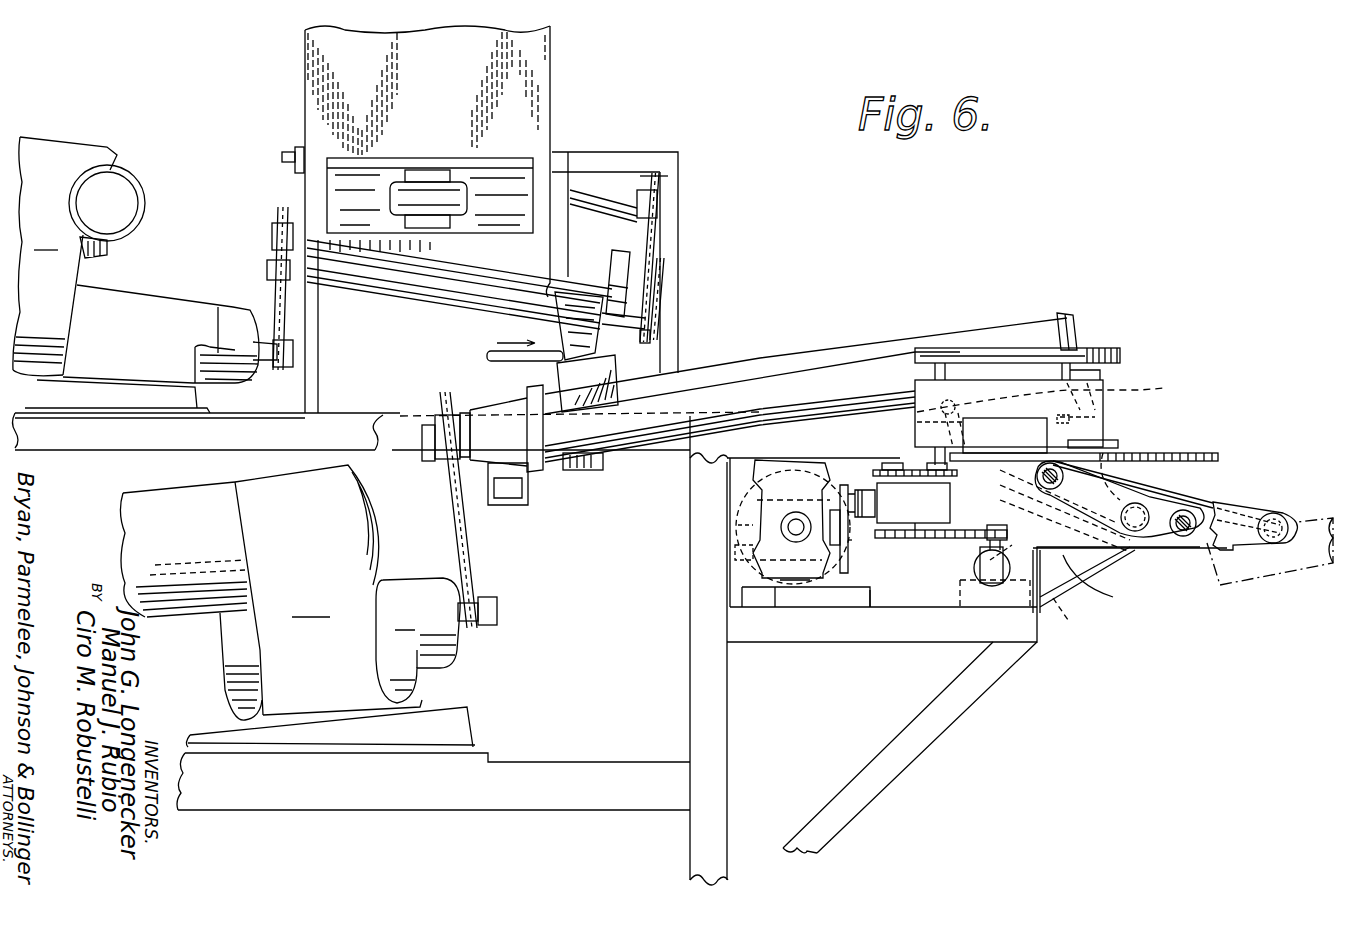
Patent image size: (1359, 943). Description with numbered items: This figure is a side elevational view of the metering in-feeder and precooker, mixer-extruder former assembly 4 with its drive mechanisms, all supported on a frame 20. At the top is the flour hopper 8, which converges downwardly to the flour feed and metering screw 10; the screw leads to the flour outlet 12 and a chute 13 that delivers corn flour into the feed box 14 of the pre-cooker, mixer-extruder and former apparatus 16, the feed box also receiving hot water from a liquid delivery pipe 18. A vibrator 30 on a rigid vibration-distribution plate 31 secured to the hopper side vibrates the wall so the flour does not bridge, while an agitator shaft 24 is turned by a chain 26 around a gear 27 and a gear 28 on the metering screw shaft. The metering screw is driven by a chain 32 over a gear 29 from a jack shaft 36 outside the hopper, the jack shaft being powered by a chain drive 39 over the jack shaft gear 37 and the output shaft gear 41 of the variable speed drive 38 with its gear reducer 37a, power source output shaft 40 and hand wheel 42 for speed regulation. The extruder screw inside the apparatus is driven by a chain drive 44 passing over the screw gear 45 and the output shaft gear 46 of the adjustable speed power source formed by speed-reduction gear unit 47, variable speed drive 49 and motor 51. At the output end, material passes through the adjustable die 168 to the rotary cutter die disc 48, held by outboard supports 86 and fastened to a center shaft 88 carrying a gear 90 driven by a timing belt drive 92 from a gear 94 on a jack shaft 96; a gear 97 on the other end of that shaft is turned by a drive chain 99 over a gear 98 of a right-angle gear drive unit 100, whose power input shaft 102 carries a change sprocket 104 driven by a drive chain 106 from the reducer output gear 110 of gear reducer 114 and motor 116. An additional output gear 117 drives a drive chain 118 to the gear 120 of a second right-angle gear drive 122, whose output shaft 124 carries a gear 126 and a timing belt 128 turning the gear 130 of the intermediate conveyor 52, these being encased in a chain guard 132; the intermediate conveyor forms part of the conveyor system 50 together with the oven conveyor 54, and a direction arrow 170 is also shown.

The metering in-feeder and precooker, mixer-extruder former assembly 4 is at (538, 825).
The flour hopper 8 is at (523, 67).
The flour feed and metering screw 10 is at (578, 258).
The flour outlet 12 is at (582, 287).
The chute 13 is at (583, 333).
The feed box 14 is at (608, 378).
The pre-cooker, mixer-extruder and former apparatus 16 is at (792, 362).
The liquid delivery pipe 18 is at (485, 356).
The frame 20 is at (712, 717).
The agitator shaft 24 is at (592, 190).
The chain 26 is at (652, 240).
The gear 27 is at (665, 190).
The gear 28 is at (655, 310).
The gear 29 is at (660, 275).
The vibrator 30 is at (455, 205).
The vibration-distribution plate 31 is at (463, 165).
The chain 32 is at (650, 340).
The jack shaft 36 is at (402, 285).
The jack shaft gear 37 is at (268, 266).
The gear reducer 37a is at (133, 297).
The adjustable-speed unit 38 is at (65, 256).
The chain drive 39 is at (275, 300).
The power source output shaft 40 is at (268, 352).
The output shaft gear 41 is at (50, 145).
The hand wheel 42 is at (132, 190).
The chain drive 44 is at (470, 545).
The screw gear 45 is at (438, 396).
The output shaft gear 46 is at (492, 618).
The speed-reduction gear unit 47 is at (470, 662).
The rotary cutter die disc 48 is at (1190, 453).
The variable speed drive 49 is at (330, 606).
The conveyor system 50 is at (1260, 502).
The motor 51 is at (182, 617).
The intermediate conveyor 52 is at (1257, 500).
The oven conveyor 54 is at (1310, 570).
The outboard supports 86 is at (1135, 470).
The center shaft 88 is at (1103, 368).
The gear 90 is at (1113, 347).
The timing belt drive 92 is at (998, 353).
The gear 94 is at (930, 345).
The jack shaft 96 is at (933, 372).
The gear 97 is at (913, 503).
The gear 98 is at (877, 473).
The drive chain 99 is at (920, 463).
The right-angle gear drive unit 100 is at (888, 510).
The power input shaft 102 is at (845, 484).
The change sprocket 104 is at (840, 485).
The drive chain 106 is at (852, 537).
The reducer output gear 110 is at (853, 595).
The gear reducer 114 is at (777, 485).
The motor 116 is at (815, 590).
The output gear 117 is at (917, 537).
The drive chain 118 is at (942, 542).
The gear 120 is at (1005, 524).
The right-angle gear drive 122 is at (996, 580).
The output shaft 124 is at (990, 556).
The gear 126 is at (1081, 620).
The timing belt 128 is at (1080, 587).
The gear 130 is at (1160, 478).
The chain guard 132 is at (1113, 597).
The adjustable die 168 is at (1163, 390).
The direction arrow 170 is at (1222, 488).